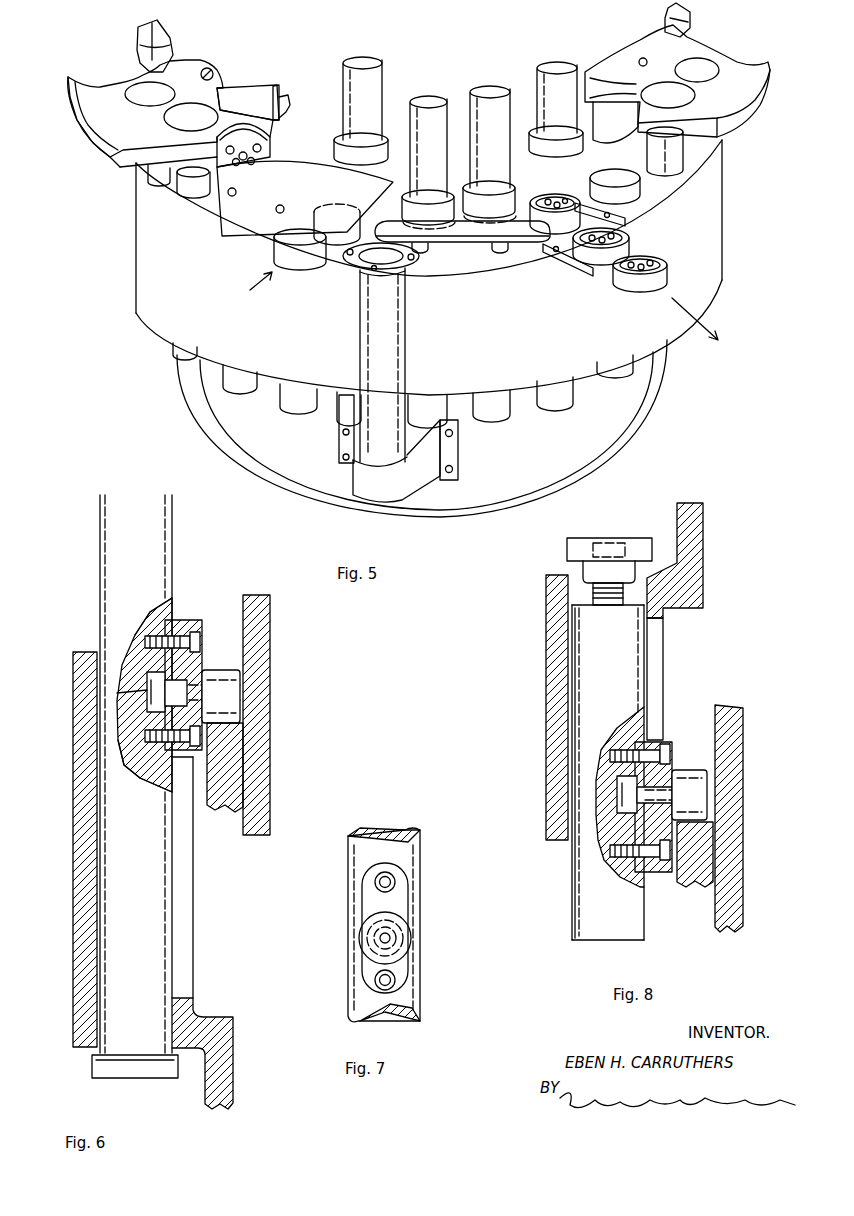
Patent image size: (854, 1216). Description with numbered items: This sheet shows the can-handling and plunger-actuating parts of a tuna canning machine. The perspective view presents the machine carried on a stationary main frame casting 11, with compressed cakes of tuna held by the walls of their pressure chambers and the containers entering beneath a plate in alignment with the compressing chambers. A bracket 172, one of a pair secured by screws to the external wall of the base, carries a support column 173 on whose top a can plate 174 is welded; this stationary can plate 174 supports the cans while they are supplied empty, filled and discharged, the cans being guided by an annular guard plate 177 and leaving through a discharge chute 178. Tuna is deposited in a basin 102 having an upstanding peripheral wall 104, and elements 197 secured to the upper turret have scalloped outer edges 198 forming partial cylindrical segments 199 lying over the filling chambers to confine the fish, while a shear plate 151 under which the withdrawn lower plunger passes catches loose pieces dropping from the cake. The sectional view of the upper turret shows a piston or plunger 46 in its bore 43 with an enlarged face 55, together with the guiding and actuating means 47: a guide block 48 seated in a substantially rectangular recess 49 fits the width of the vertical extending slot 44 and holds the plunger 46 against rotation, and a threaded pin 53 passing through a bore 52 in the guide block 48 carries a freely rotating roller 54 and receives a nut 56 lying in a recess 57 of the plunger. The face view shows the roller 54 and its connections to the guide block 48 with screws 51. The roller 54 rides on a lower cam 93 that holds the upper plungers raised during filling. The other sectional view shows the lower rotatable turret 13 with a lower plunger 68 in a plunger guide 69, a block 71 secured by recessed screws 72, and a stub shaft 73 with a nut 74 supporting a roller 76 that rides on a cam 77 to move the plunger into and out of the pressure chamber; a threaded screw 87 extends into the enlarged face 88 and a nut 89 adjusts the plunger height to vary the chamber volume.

In FIG. 5, the main frame casting 11 is at (422, 428).
In FIG. 8, the lower rotatable turret 13 is at (518, 710).
In FIG. 6, the bore 43 is at (175, 845).
In FIG. 6, the vertical extending slot 44 is at (193, 901).
In FIG. 5, the piston or plunger 46 is at (372, 92).
In FIG. 6, the piston or plunger 46 is at (160, 872).
In FIG. 6, the guiding and actuating means 47 is at (210, 617).
In FIG. 6, the guide block 48 is at (185, 685).
In FIG. 7, the guide block 48 is at (400, 905).
In FIG. 6, the rectangular recess 49 is at (166, 625).
In FIG. 6, the screw 51 is at (186, 750).
In FIG. 7, the screw 51 is at (396, 882).
In FIG. 6, the bore 52 is at (185, 690).
In FIG. 6, the pin 53 is at (192, 698).
In FIG. 6, the roller 54 is at (232, 674).
In FIG. 7, the roller 54 is at (411, 942).
In FIG. 6, the enlarged face 55 is at (131, 1074).
In FIG. 6, the nut 56 is at (152, 720).
In FIG. 6, the recess 57 is at (122, 695).
In FIG. 8, the lower plunger 68 is at (608, 772).
In FIG. 8, the plunger guide 69 is at (655, 686).
In FIG. 8, the block 71 is at (658, 773).
In FIG. 8, the recessed screws 72 is at (660, 744).
In FIG. 8, the stub shaft 73 is at (664, 796).
In FIG. 8, the nut 74 is at (620, 790).
In FIG. 8, the roller 76 is at (702, 795).
In FIG. 8, the cam 77 is at (710, 848).
In FIG. 8, the threaded screw 87 is at (619, 594).
In FIG. 8, the enlarged face 88 is at (567, 547).
In FIG. 8, the nut 89 is at (583, 570).
In FIG. 6, the lower cam 93 is at (232, 757).
In FIG. 5, the basin 102 is at (419, 136).
In FIG. 5, the upstanding peripheral wall 104 is at (115, 140).
In FIG. 5, the shear plate 151 is at (305, 198).
In FIG. 5, the bracket 172 is at (420, 483).
In FIG. 5, the support column 173 is at (393, 342).
In FIG. 5, the can plate 174 is at (512, 264).
In FIG. 5, the annular guard plate 177 is at (465, 246).
In FIG. 5, the discharge chute 178 is at (620, 221).
In FIG. 5, the elements 197 is at (232, 72).
In FIG. 5, the outer edges 198 is at (250, 84).
In FIG. 5, the partial cylindrical segments 199 is at (262, 98).